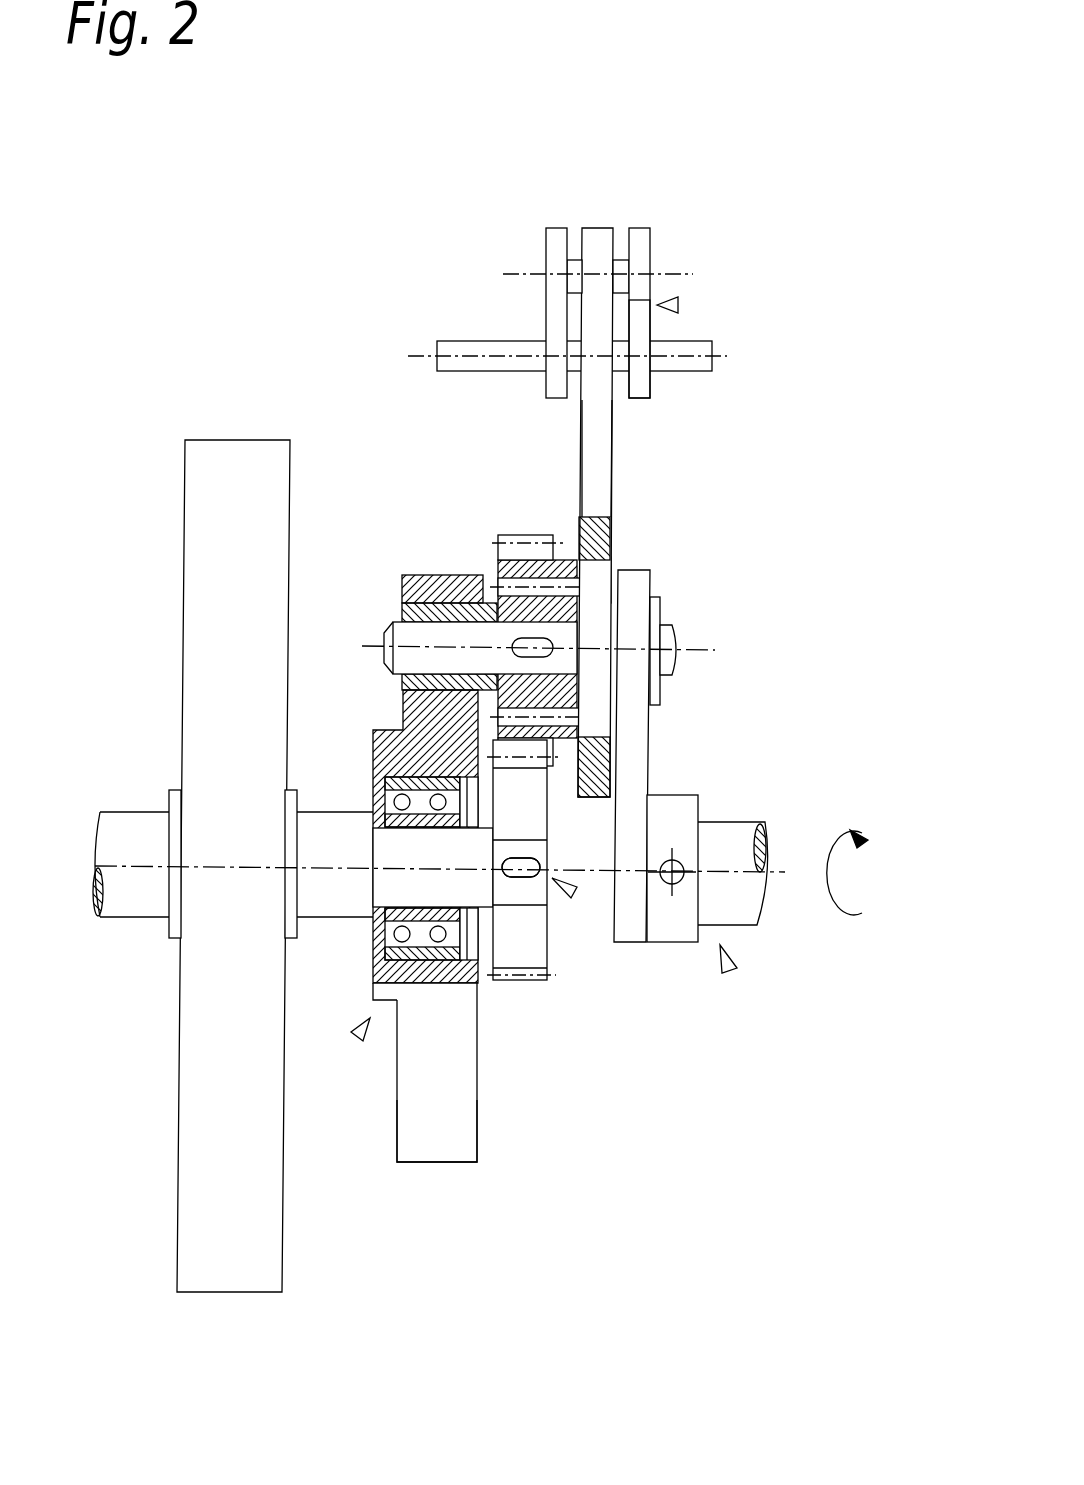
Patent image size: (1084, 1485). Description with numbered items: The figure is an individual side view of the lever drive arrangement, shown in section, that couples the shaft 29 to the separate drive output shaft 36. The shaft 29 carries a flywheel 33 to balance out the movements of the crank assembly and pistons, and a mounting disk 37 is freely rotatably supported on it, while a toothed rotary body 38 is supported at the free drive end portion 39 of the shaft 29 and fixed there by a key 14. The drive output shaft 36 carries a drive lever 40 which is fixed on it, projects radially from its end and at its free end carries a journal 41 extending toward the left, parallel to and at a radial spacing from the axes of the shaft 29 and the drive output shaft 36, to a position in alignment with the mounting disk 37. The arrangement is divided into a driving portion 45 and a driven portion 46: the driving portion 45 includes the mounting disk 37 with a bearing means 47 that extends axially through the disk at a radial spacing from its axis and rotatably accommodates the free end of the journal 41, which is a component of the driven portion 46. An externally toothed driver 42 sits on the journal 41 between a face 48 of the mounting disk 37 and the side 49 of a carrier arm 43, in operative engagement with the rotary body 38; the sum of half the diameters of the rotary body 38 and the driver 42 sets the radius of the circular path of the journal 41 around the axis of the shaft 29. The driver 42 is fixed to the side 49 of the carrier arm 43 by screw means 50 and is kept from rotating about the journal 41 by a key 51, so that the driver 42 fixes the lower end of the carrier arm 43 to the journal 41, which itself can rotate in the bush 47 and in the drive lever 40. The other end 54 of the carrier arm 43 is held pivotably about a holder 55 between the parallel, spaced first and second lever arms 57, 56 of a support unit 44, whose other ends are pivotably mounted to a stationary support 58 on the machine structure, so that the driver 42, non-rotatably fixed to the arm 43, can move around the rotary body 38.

The key 14 is at (530, 878).
The shaft 29 is at (130, 903).
The flywheel 33 is at (190, 1237).
The drive output shaft 36 is at (723, 837).
The mounting disk 37 is at (428, 1138).
The rotary body 38 is at (513, 953).
The free drive end portion 39 is at (576, 893).
The drive lever 40 is at (627, 748).
The journal 41 is at (413, 633).
The driver 42 is at (497, 557).
The carrier arm 43 is at (593, 467).
The support unit 44 is at (678, 305).
The driving portion 45 is at (357, 1036).
The driven portion 46 is at (728, 970).
The bearing means 47 is at (412, 680).
The face 48 is at (477, 1058).
The side 49 is at (581, 428).
The screw means 50 is at (600, 560).
The key 51 is at (537, 645).
The end 54 is at (640, 243).
The holder 55 is at (620, 272).
The second lever arm 56 is at (643, 263).
The first lever arm 57 is at (557, 257).
The stationary support 58 is at (703, 355).